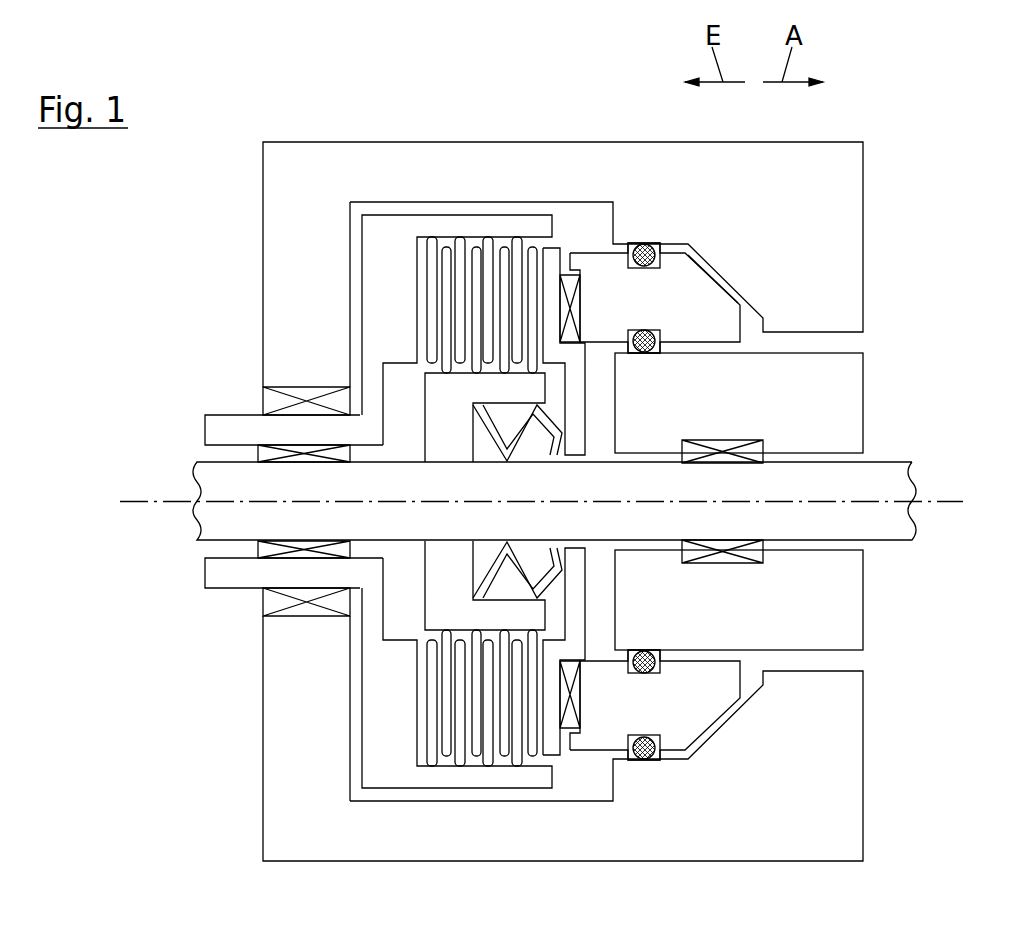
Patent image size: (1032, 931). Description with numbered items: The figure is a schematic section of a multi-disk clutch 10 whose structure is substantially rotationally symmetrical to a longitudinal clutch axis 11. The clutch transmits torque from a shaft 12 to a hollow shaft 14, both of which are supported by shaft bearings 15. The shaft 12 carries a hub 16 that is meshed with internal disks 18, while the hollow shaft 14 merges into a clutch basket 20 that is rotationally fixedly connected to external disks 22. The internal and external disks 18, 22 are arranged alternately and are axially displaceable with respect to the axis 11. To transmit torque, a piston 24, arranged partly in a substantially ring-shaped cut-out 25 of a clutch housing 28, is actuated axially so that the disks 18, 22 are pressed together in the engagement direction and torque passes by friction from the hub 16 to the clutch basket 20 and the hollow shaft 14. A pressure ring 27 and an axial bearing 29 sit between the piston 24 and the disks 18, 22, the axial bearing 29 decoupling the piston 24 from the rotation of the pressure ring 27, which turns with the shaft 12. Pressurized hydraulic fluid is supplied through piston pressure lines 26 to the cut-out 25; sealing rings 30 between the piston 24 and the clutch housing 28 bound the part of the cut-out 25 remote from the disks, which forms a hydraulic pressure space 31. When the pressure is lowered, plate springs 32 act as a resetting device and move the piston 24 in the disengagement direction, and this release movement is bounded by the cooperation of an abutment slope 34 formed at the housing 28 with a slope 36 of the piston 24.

The multi-disk clutch 10 is at (885, 105).
The longitudinal clutch axis 11 is at (947, 500).
The shaft 12 is at (872, 462).
The hollow shaft 14 is at (220, 415).
The shaft bearings 15 is at (263, 600).
The hub 16 is at (423, 605).
The internal disks 18 is at (475, 757).
The clutch basket 20 is at (362, 268).
The external disks 22 is at (460, 363).
The piston 24 is at (720, 662).
The ring shaped cut-out 25 is at (755, 325).
The piston pressure lines 26 is at (857, 352).
The pressure ring 27 is at (557, 245).
The clutch housing 28 is at (863, 160).
The axial bearing 29 is at (575, 268).
The sealing rings 30 is at (646, 247).
The hydraulic pressure space 31 is at (777, 345).
The plate springs 32 is at (547, 435).
The abutment slope 34 is at (755, 305).
The slope 36 is at (725, 290).